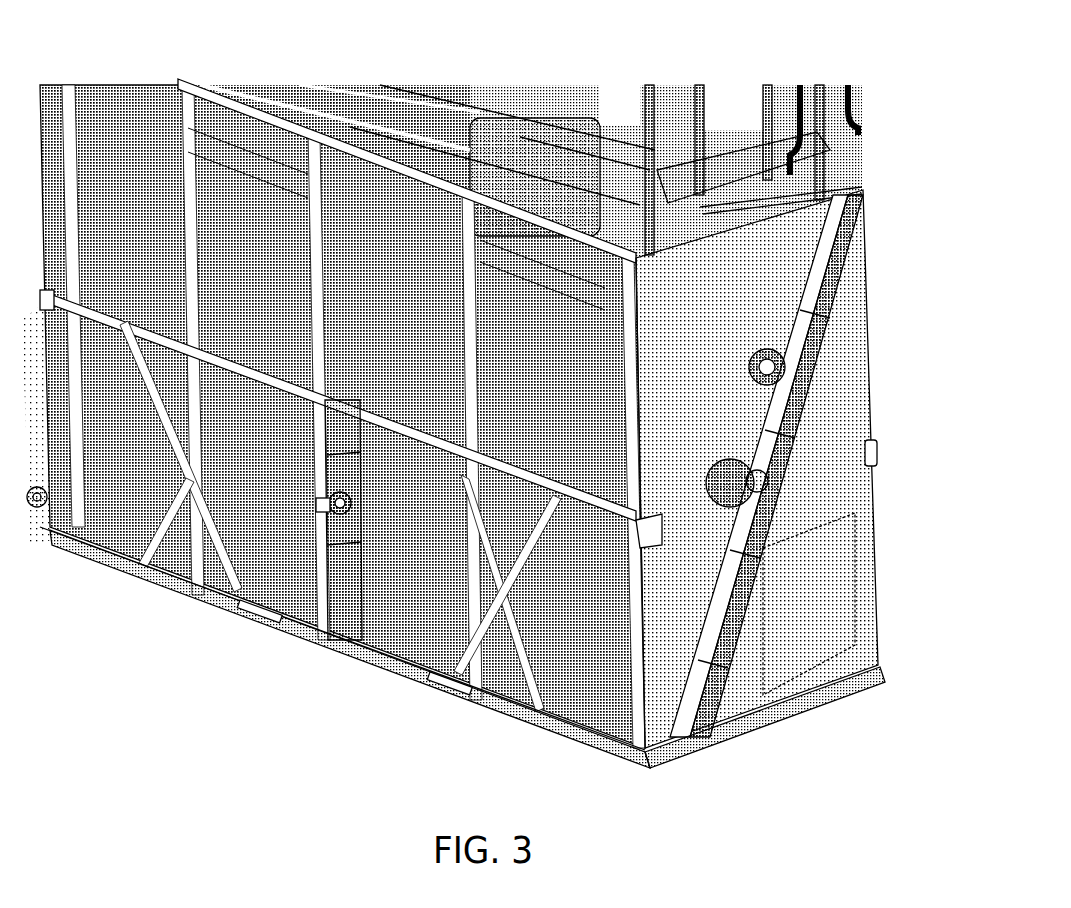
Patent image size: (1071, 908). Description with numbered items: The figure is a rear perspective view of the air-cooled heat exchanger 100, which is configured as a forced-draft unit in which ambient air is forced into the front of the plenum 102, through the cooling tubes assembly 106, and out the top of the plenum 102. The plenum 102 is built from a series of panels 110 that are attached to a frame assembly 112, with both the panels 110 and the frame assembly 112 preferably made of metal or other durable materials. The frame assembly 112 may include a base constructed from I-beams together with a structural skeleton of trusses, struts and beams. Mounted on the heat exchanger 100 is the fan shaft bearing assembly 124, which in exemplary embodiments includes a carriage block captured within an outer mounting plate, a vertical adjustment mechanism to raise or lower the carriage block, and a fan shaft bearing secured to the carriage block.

The air-cooled heat exchanger 100 is at (485, 425).
The plenum 102 is at (775, 276).
The cooling tubes assembly 106 is at (713, 690).
The panels 110 is at (143, 482).
The frame assembly 112 is at (537, 700).
The fan shaft bearing assembly 124 is at (306, 490).